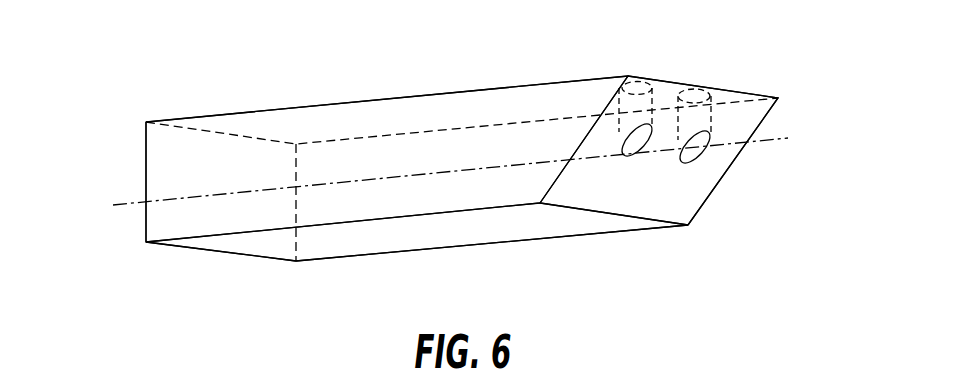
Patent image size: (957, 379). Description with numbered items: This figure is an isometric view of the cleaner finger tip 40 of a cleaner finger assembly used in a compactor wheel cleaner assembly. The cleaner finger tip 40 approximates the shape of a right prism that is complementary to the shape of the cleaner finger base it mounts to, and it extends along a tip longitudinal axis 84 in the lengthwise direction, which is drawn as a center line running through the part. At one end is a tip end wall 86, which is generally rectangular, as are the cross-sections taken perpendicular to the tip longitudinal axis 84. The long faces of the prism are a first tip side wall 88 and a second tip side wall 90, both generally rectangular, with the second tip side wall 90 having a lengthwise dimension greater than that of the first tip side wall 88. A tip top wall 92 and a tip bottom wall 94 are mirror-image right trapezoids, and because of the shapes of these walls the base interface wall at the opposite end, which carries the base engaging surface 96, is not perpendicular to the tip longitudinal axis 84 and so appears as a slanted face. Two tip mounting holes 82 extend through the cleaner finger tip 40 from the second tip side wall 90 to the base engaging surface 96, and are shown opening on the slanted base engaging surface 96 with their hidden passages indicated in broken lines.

The cleaner finger tip 40 is at (476, 70).
The tip mounting holes 82 is at (640, 152).
The tip longitudinal axis 84 is at (772, 140).
The tip end wall 86 is at (163, 168).
The first tip side wall 88 is at (393, 240).
The second tip side wall 90 is at (310, 117).
The tip top wall 92 is at (235, 220).
The tip bottom wall 94 is at (560, 222).
The base engaging surface 96 is at (643, 207).